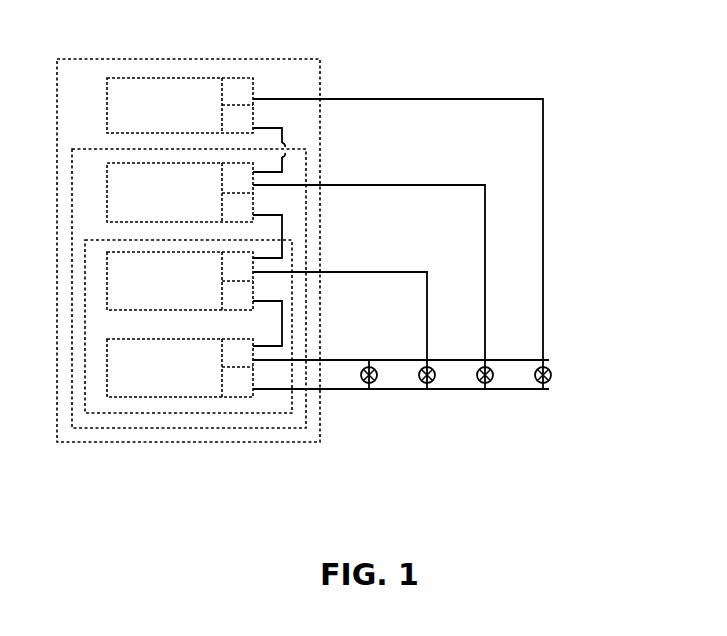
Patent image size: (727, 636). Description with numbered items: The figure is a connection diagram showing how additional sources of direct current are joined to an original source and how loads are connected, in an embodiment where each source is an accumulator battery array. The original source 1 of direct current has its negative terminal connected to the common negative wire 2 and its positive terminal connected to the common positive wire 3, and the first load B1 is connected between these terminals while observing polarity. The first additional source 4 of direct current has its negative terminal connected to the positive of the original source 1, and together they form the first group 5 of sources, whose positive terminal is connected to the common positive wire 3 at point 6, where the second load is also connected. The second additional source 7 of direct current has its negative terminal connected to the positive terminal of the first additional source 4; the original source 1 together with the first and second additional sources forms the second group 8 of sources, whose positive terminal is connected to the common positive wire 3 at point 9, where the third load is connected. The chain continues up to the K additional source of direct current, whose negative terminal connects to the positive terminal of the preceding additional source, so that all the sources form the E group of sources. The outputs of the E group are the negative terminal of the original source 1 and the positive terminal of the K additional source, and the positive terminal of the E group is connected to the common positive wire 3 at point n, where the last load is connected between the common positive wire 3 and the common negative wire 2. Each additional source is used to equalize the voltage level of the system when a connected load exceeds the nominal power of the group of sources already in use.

The E group of sources E is at (282, 59).
The K additional source of direct current K is at (180, 105).
The second additional source of direct current 7 is at (180, 192).
The first additional source of direct current 4 is at (180, 281).
The original source of direct current 1 is at (180, 368).
The first group of sources 5 is at (115, 414).
The second group of sources 8 is at (195, 429).
The common positive wire 3 is at (345, 359).
The common negative wire 2 is at (345, 391).
The point of connection of second load B2 6 is at (431, 359).
The point of connection of third load B3 9 is at (489, 359).
The point of connection of N load BN n is at (547, 359).
The first load B1 is at (359, 374).